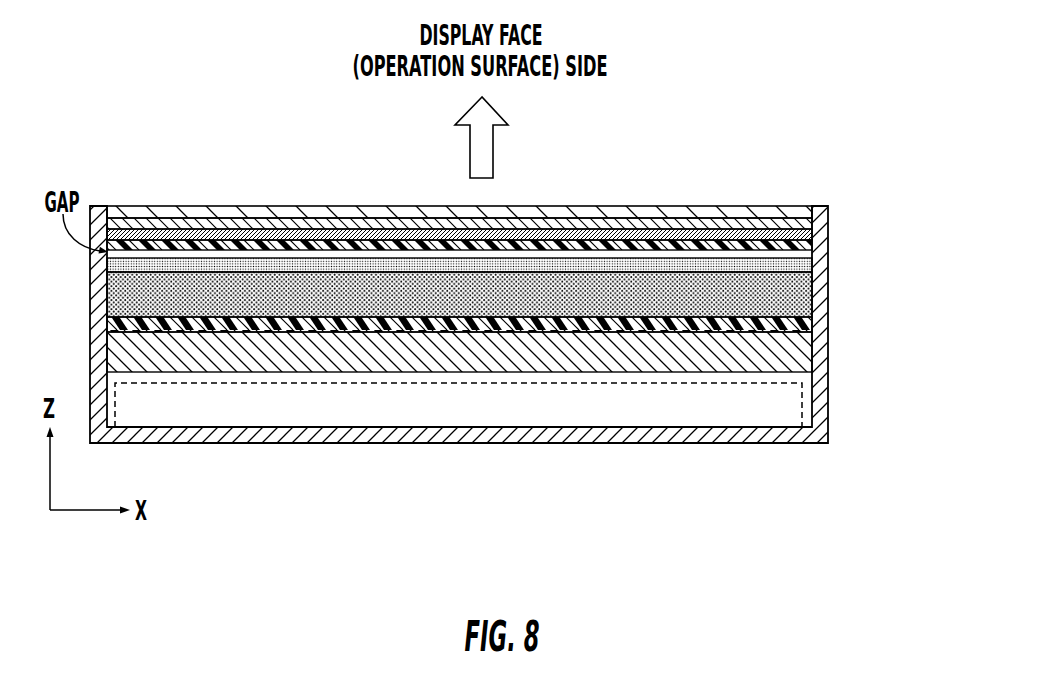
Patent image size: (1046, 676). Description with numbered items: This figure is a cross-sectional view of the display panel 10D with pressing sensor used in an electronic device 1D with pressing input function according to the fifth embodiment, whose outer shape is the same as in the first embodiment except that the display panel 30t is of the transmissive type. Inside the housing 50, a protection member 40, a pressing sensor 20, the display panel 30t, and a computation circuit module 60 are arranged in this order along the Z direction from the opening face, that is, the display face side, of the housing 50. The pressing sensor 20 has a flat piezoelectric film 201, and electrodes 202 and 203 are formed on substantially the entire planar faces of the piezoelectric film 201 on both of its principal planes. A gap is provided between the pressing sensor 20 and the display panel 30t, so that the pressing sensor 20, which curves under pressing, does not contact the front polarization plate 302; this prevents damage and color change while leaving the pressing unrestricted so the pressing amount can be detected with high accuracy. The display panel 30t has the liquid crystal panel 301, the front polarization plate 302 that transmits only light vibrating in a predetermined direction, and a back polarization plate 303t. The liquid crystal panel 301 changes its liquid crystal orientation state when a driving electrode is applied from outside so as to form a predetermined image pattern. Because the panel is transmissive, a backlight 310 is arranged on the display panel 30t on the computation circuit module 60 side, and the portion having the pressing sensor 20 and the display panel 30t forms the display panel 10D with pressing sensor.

The electronic device with pressing input function 1D is at (162, 162).
The display panel with pressing sensor 10D is at (931, 209).
The pressing sensor 20 is at (887, 192).
The electrode 202 is at (812, 224).
The piezoelectric film 201 is at (812, 235).
The electrode 203 is at (812, 246).
The display panel 30t is at (888, 283).
The front polarization plate 302 is at (812, 268).
The liquid crystal panel 301 is at (805, 297).
The back polarization plate 303t is at (806, 326).
The backlight 310 is at (806, 356).
The protection member 40 is at (766, 212).
The housing 50 is at (820, 413).
The computation circuit module 60 is at (710, 420).